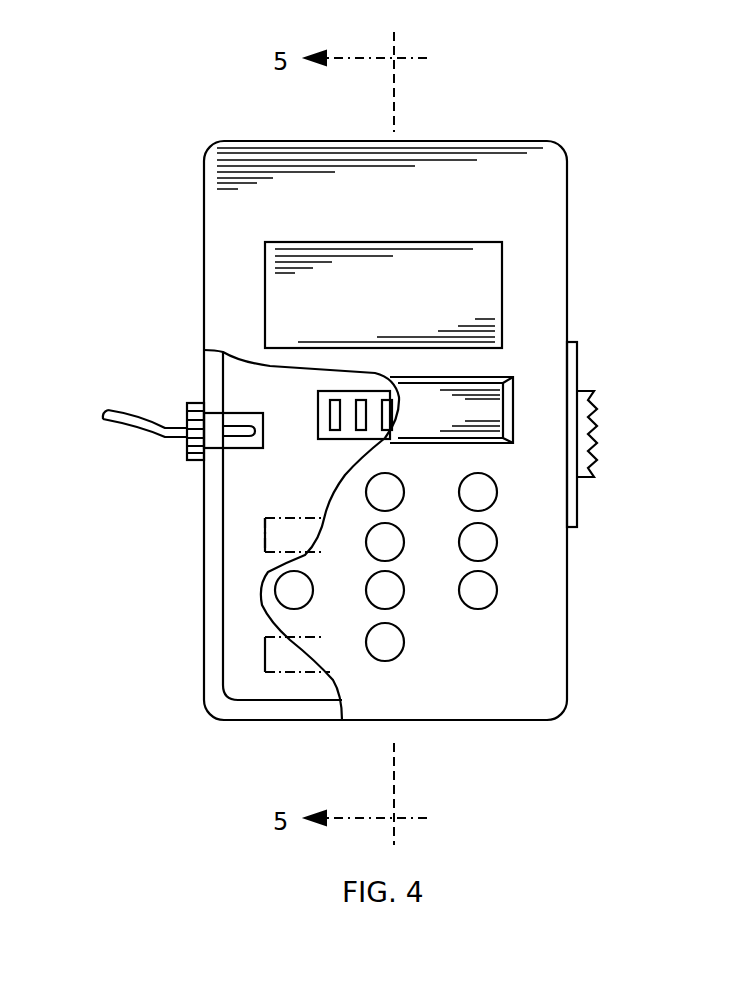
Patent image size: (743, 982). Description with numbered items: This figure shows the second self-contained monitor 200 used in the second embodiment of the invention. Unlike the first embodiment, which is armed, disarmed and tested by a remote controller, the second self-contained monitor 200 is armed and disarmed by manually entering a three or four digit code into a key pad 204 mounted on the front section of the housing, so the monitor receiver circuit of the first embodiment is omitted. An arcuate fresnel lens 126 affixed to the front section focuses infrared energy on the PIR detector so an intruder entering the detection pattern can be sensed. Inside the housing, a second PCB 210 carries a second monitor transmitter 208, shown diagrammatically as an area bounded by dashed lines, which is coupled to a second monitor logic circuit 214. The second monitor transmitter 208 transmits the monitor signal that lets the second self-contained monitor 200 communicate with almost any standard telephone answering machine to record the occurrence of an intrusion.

The fresnel lens 126 is at (328, 252).
The second self-contained monitor 200 is at (567, 219).
The key pad 204 is at (492, 506).
The second monitor transmitter 208 is at (263, 541).
The second PCB 210 is at (240, 382).
The second monitor logic circuit 214 is at (262, 650).